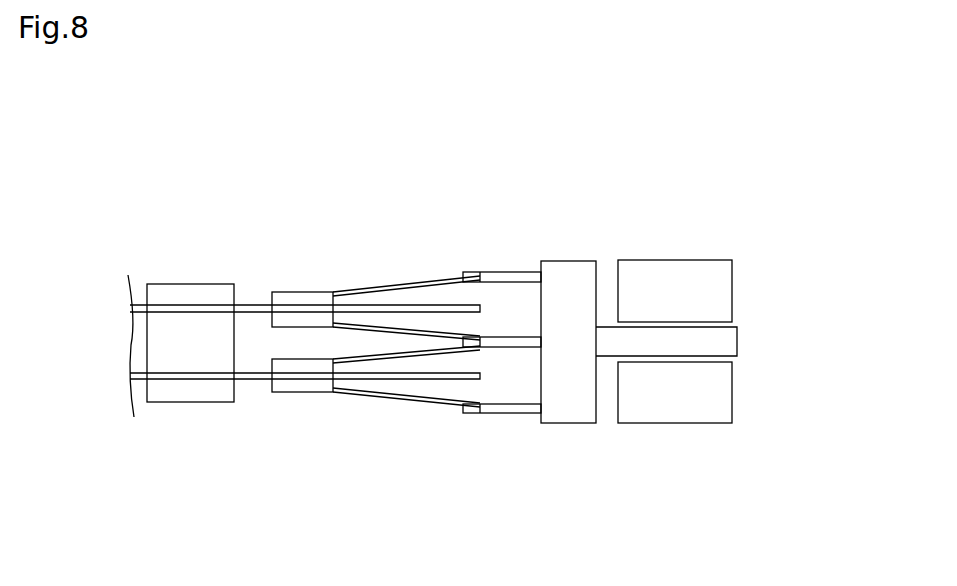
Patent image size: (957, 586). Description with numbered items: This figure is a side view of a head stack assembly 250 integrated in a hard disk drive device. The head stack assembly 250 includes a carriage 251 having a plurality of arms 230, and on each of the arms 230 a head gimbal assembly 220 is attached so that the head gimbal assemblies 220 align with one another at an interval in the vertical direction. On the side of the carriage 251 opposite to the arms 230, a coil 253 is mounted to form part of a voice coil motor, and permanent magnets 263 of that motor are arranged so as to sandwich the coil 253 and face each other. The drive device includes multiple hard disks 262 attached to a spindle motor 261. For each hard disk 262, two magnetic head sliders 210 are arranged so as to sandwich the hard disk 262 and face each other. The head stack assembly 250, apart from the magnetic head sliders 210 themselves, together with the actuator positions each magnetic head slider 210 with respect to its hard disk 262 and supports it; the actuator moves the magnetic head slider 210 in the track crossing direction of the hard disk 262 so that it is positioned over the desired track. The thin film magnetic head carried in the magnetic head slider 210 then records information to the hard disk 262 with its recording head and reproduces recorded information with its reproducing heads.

The magnetic head slider 210 is at (270, 297).
The head gimbal assembly 220 is at (392, 280).
The arm 230 is at (477, 270).
The head stack assembly 250 is at (681, 344).
The carriage 251 is at (573, 415).
The coil 253 is at (725, 345).
The spindle motor 261 is at (170, 290).
The hard disk 262 is at (245, 300).
The permanent magnet 263 is at (668, 260).